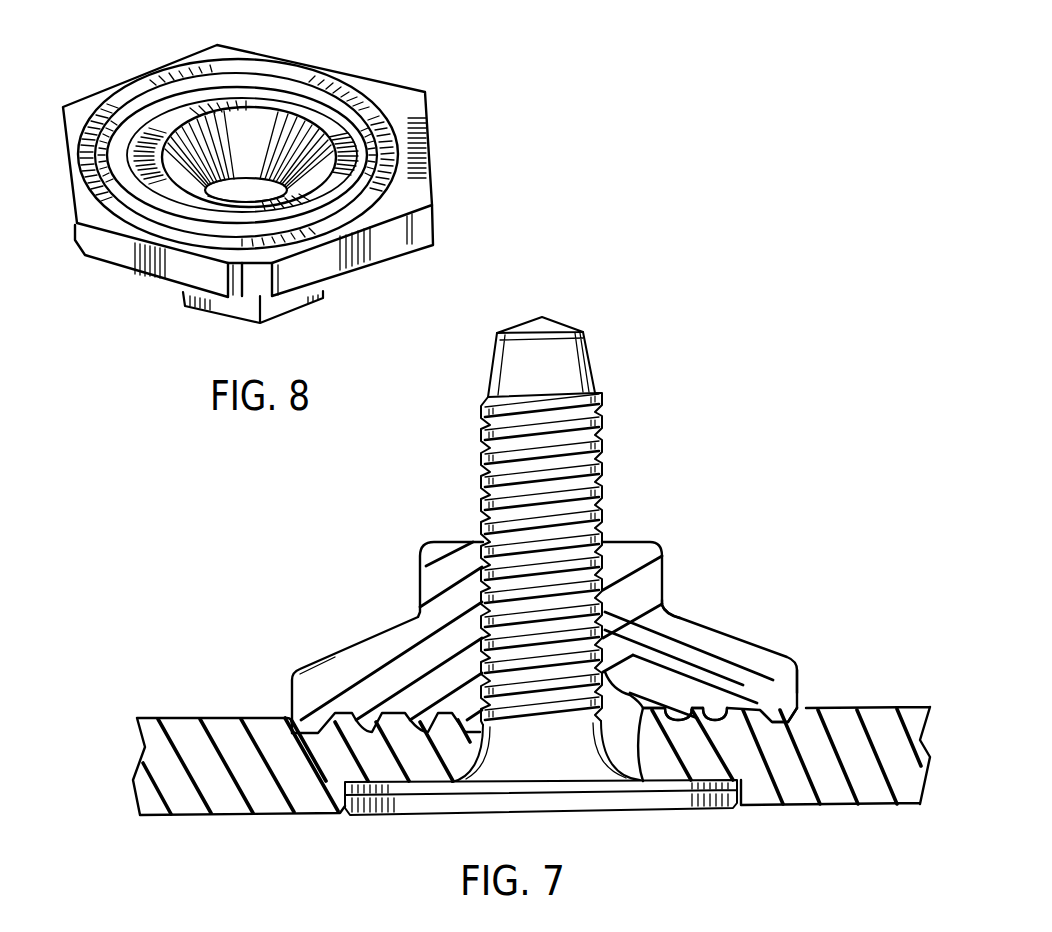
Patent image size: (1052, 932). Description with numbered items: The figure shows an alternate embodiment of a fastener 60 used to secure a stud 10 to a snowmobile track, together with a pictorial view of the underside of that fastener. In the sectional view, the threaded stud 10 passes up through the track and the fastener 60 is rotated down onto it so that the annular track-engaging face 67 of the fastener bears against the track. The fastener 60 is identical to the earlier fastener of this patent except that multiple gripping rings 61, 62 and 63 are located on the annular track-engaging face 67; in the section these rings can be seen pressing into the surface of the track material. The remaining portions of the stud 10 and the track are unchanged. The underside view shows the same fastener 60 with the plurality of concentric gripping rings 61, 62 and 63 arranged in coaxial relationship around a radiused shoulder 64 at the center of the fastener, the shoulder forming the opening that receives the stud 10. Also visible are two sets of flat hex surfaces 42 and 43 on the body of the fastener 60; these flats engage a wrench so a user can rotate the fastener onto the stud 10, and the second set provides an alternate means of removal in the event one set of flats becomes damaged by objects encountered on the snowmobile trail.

In FIG. 7, the stud 10 is at (600, 360).
In FIG. 8, the flat hex surfaces 42 is at (288, 304).
In FIG. 8, the flat hex surfaces 43 is at (433, 138).
In FIG. 7, the fastener 60 is at (682, 614).
In FIG. 8, the gripping ring 61 is at (320, 137).
In FIG. 7, the gripping ring 61 is at (677, 716).
In FIG. 8, the gripping ring 62 is at (340, 113).
In FIG. 7, the gripping ring 62 is at (750, 685).
In FIG. 8, the gripping ring 63 is at (413, 110).
In FIG. 7, the gripping ring 63 is at (783, 711).
In FIG. 8, the radiused shoulder 64 is at (245, 157).
In FIG. 7, the radiused shoulder 64 is at (667, 620).
In FIG. 7, the annular track-engaging face 67 is at (710, 716).